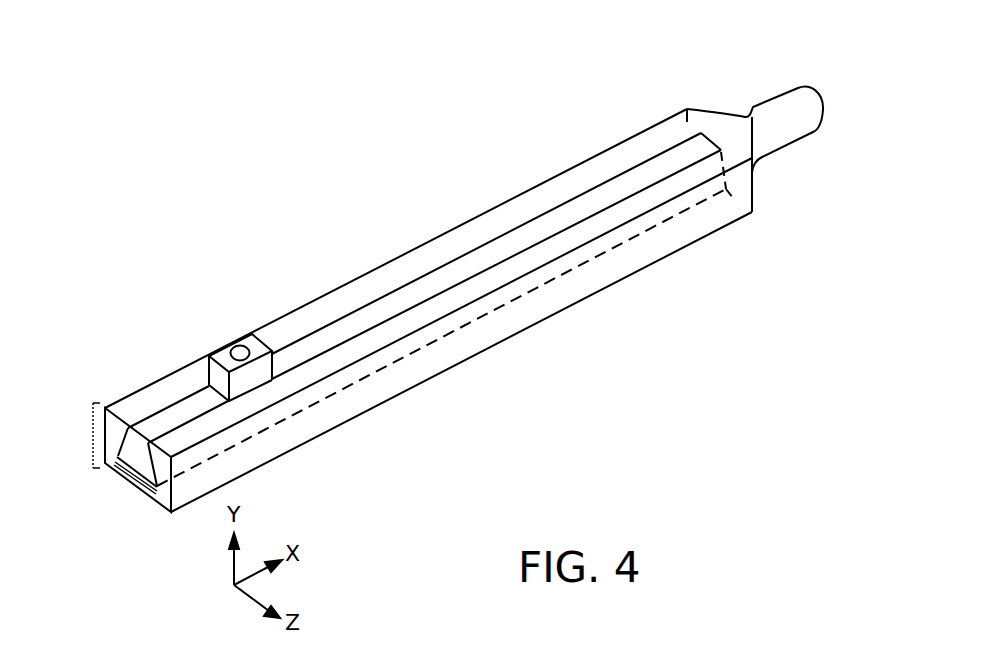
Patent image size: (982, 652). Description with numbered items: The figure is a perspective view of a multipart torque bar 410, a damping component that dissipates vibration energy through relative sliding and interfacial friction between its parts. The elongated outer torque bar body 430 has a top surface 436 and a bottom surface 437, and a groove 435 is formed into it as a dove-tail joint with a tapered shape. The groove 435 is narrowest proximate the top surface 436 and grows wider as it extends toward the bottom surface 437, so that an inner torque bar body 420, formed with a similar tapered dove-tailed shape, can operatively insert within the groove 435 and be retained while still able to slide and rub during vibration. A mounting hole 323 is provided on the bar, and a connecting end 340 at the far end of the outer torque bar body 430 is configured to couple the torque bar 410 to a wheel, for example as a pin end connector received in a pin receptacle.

The torque bar 410 is at (368, 232).
The top surface 436 is at (482, 230).
The bottom surface 437 is at (562, 317).
The connecting end 340 is at (782, 108).
The mounting hole 323 is at (240, 353).
The inner torque bar body 420 is at (168, 423).
The outer torque bar body 430 is at (92, 437).
The groove 435 is at (137, 475).